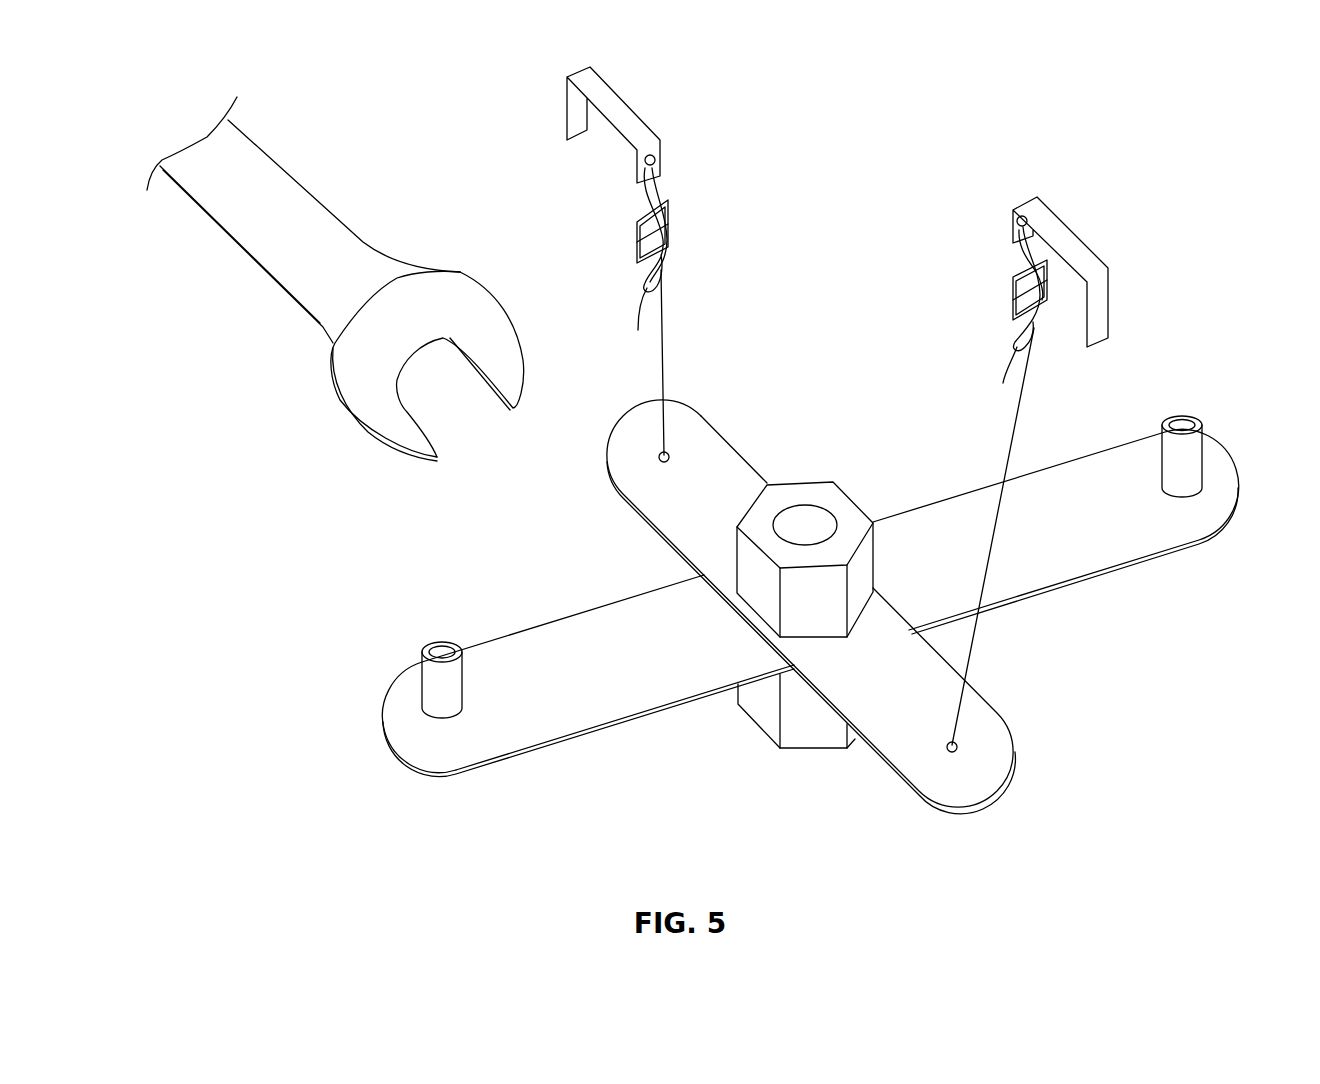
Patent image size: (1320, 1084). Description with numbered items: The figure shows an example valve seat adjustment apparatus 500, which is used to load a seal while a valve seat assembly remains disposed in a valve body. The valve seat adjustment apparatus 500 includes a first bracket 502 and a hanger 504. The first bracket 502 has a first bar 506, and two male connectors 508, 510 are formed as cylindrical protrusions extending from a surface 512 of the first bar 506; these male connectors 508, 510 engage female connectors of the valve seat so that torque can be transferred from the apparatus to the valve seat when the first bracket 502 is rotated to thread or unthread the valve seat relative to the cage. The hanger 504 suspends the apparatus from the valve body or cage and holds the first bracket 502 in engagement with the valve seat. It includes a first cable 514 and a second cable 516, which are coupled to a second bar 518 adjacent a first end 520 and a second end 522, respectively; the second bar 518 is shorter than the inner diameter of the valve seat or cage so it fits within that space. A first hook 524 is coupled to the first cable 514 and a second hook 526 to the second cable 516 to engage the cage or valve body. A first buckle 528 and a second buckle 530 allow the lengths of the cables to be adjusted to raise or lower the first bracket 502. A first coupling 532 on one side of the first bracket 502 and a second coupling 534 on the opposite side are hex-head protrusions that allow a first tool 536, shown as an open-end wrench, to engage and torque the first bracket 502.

The valve seat adjustment apparatus 500 is at (1046, 176).
The first bracket 502 is at (517, 609).
The hanger 504 is at (1022, 699).
The first bar 506 is at (532, 727).
The male connector 508 is at (442, 652).
The male connector 510 is at (1182, 425).
The surface 512 is at (650, 647).
The first cable 514 is at (663, 340).
The second cable 516 is at (1007, 457).
The second bar 518 is at (712, 473).
The first end 520 is at (608, 451).
The second end 522 is at (997, 793).
The first hook 524 is at (628, 127).
The second hook 526 is at (1077, 230).
The first buckle 528 is at (667, 263).
The second buckle 530 is at (1010, 330).
The first coupling 532 is at (827, 497).
The second coupling 534 is at (760, 698).
The first tool 536 is at (365, 245).